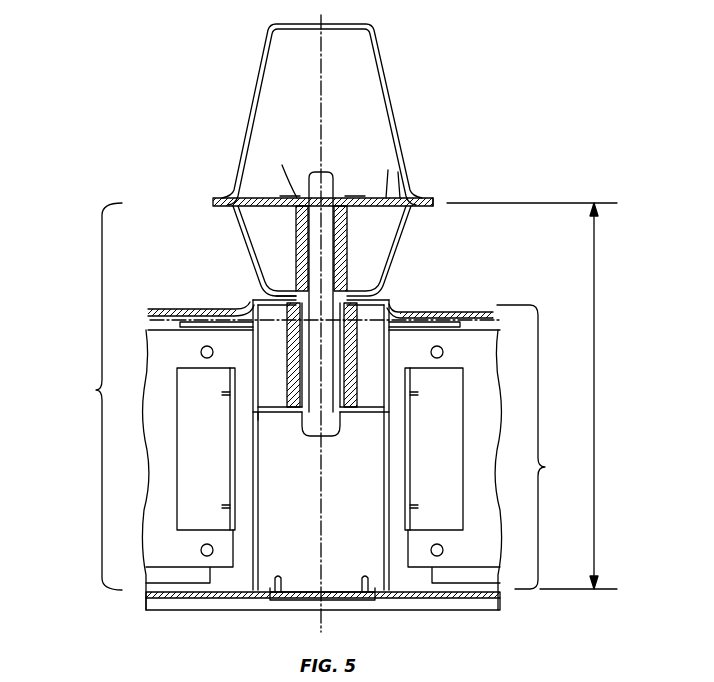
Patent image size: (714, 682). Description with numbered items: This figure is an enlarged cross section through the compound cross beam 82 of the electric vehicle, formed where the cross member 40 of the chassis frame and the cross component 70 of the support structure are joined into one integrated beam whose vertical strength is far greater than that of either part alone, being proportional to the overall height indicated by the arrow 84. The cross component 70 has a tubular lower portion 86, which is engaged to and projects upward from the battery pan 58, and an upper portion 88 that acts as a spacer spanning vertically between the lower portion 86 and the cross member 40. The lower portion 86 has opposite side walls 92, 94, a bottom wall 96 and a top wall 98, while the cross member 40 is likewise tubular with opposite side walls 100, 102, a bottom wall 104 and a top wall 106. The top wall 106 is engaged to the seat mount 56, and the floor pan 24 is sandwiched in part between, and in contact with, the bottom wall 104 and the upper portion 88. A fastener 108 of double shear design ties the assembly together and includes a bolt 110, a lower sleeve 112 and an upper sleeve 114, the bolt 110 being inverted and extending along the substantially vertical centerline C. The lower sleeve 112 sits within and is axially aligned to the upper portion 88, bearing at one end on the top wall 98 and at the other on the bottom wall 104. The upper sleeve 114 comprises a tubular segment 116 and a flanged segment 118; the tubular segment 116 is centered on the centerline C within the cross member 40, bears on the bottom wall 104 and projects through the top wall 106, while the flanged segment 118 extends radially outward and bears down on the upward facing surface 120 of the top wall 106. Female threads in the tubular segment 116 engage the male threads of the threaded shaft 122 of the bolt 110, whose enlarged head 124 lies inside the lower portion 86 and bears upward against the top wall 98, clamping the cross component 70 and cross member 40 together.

The vertical centerline C is at (321, 85).
The floor pan 24 is at (456, 312).
The cross member 40 is at (405, 243).
The seat mount 56 is at (383, 66).
The battery pan 58 is at (394, 598).
The cross component 70 is at (545, 467).
The compound cross beam 82 is at (96, 390).
The overall height 84 is at (597, 386).
The lower portion 86 is at (256, 454).
The upper portion 88 is at (256, 374).
The side wall 92 is at (262, 488).
The side wall 94 is at (383, 522).
The bottom wall 96 is at (270, 592).
The top wall 98 is at (276, 415).
The side wall 100 is at (240, 212).
The side wall 102 is at (420, 214).
The bottom wall 104 is at (280, 291).
The top wall 106 is at (405, 165).
The fastener 108 is at (443, 351).
The bolt 110 is at (201, 351).
The lower sleeve 112 is at (358, 378).
The upper sleeve 114 is at (350, 252).
The tubular segment 116 is at (300, 232).
The flanged segment 118 is at (302, 198).
The upward facing surface 120 is at (398, 148).
The threaded shaft 122 is at (298, 380).
The enlarged head 124 is at (331, 440).